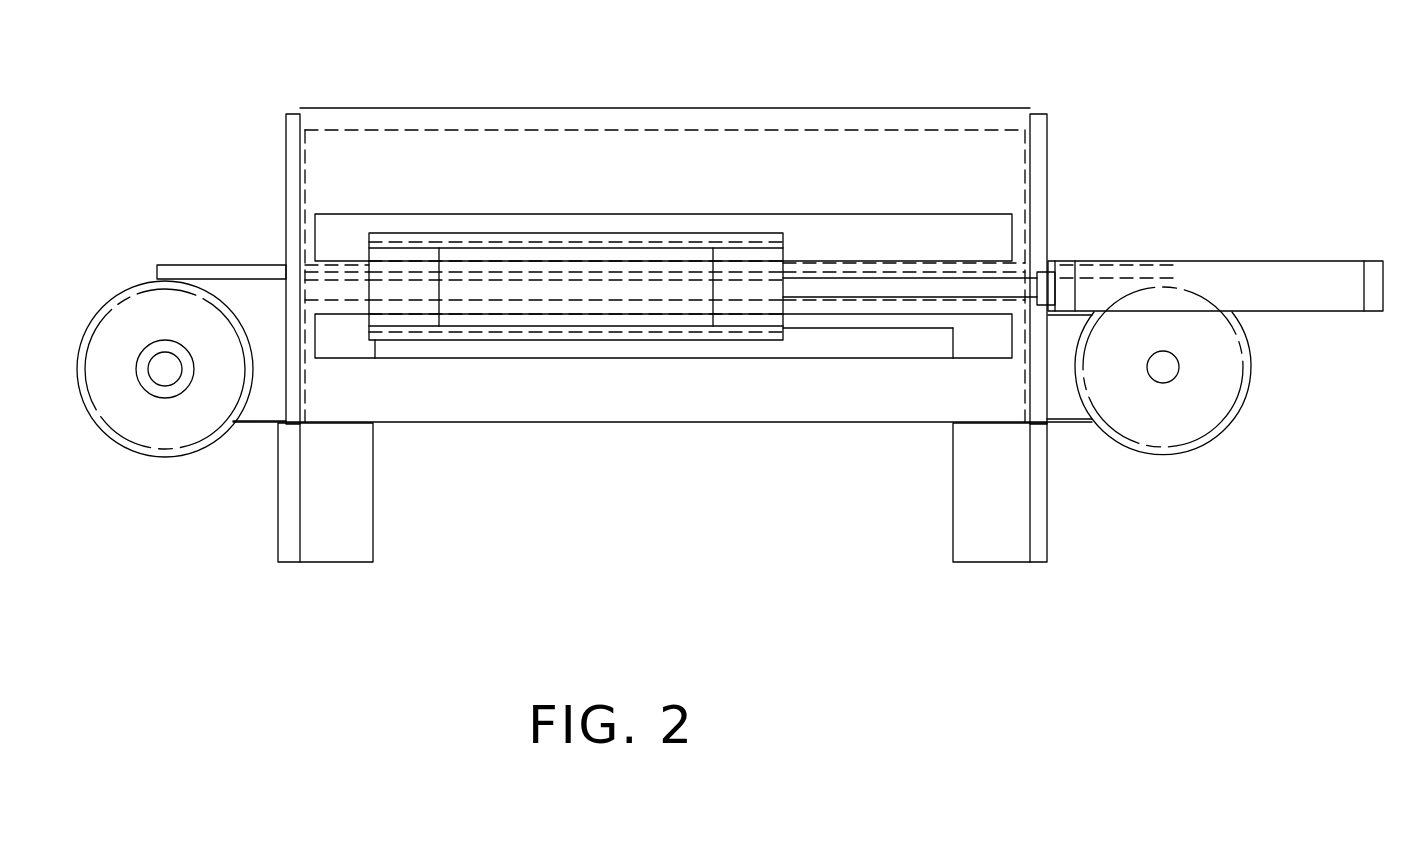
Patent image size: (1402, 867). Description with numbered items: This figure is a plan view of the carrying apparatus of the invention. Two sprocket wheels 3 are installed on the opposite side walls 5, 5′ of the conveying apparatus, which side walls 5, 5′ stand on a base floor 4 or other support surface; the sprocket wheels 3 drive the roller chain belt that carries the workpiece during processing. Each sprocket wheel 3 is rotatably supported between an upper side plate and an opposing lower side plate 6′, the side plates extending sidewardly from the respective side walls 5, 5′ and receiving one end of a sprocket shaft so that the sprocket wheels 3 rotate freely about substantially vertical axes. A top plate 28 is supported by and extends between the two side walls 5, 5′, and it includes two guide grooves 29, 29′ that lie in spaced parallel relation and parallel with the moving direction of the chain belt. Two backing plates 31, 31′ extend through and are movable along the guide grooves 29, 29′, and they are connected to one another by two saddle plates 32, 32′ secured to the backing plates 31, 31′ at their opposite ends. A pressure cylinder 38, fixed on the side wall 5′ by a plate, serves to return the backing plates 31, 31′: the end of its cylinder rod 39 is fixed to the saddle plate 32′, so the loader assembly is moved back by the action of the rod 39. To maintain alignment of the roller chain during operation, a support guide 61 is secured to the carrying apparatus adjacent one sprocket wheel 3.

The sprocket wheel 3 is at (128, 308).
The base floor 4 is at (953, 530).
The side wall 5 is at (286, 140).
The side wall 5′ is at (1048, 150).
The lower side plate 6′ is at (262, 403).
The top plate 28 is at (923, 155).
The guide groove 29 is at (875, 343).
The guide groove 29′ is at (833, 237).
The backing plate 31 is at (742, 342).
The backing plate 31′ is at (620, 237).
The saddle plate 32 is at (402, 238).
The saddle plate 32′ is at (723, 240).
The pressure cylinder 38 is at (1290, 275).
The cylinder rod 39 is at (915, 285).
The support guide 61 is at (187, 265).